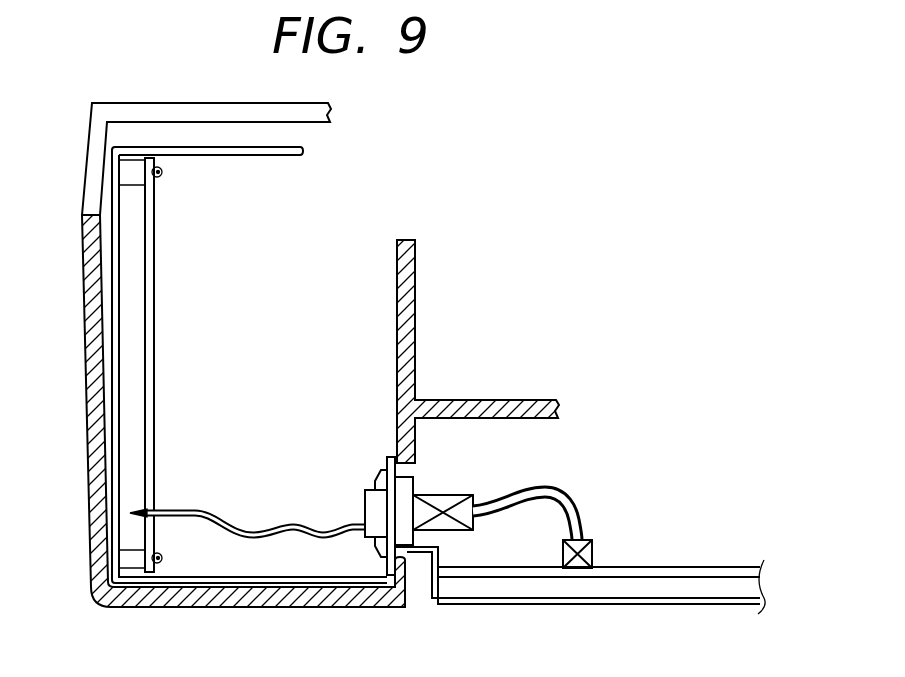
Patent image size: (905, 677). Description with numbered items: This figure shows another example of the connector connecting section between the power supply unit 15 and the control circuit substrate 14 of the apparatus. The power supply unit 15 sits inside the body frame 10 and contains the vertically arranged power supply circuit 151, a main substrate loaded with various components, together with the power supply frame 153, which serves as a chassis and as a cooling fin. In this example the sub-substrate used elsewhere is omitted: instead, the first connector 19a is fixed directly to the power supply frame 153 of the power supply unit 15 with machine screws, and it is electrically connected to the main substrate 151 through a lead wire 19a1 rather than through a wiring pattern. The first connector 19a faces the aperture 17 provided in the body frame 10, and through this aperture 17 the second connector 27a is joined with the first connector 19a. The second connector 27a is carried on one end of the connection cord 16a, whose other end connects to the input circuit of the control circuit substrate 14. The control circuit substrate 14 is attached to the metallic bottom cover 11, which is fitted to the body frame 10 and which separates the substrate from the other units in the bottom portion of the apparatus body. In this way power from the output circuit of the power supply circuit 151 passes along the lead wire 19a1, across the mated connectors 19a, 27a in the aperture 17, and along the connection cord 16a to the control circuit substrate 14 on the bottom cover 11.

The body frame 10 is at (107, 610).
The bottom cover 11 is at (563, 607).
The control circuit substrate 14 is at (712, 568).
The power supply unit 15 is at (113, 353).
The power supply circuit 151 is at (150, 312).
The power supply frame 153 is at (222, 570).
The connection cord 16a is at (578, 508).
The aperture 17 is at (405, 468).
The first connector 19a is at (370, 508).
The lead wire 19a1 is at (238, 526).
The second connector 27a is at (462, 493).